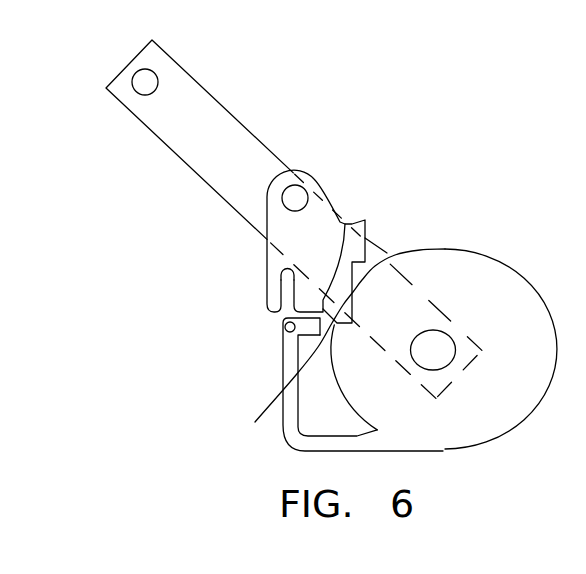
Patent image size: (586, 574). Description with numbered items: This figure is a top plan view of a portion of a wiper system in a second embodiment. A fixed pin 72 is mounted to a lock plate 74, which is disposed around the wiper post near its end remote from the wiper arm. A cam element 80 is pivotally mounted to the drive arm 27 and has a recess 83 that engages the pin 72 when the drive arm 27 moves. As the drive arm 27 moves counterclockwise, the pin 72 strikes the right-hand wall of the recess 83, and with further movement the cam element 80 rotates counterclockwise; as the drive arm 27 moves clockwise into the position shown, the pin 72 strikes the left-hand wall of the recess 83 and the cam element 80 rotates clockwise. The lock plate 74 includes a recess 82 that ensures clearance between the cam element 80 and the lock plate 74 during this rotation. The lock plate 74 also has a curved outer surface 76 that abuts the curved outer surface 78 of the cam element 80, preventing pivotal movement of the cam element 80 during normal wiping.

The drive arm 27 is at (217, 102).
The cam element 80 is at (319, 180).
The recess 83 is at (281, 287).
The curved outer surface 78 is at (352, 222).
The curved outer surface 76 is at (445, 247).
The lock plate 74 is at (531, 365).
The fixed pin 72 is at (283, 328).
The recess 82 is at (340, 350).